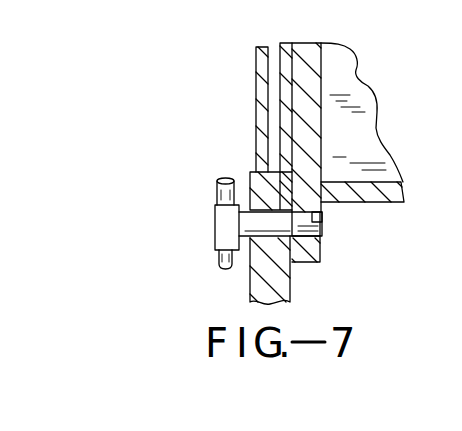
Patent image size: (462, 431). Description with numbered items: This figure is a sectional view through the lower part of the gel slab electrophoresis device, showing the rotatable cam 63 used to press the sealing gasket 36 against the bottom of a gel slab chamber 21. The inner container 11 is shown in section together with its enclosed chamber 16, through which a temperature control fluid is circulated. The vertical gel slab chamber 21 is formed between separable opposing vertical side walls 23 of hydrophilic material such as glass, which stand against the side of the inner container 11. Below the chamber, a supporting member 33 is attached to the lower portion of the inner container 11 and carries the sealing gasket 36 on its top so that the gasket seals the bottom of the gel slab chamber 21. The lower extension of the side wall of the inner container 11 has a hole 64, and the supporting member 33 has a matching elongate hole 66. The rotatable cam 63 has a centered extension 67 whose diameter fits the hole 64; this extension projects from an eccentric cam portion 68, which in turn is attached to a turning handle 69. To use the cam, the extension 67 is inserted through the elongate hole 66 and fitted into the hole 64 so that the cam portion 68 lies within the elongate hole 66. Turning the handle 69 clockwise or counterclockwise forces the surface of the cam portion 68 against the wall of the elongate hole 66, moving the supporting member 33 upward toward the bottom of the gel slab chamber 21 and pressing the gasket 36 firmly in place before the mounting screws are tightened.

The inner container 11 is at (378, 222).
The enclosed chamber 16 is at (364, 143).
The vertical gel slab chamber 21 is at (267, 83).
The vertical side walls 23 is at (256, 64).
The supporting members 33 is at (250, 291).
The sealing gasket 36 is at (250, 172).
The rotatable cam 63 is at (215, 212).
The hole 64 is at (322, 222).
The elongate hole 66 is at (262, 230).
The centered extension 67 is at (318, 240).
The eccentric cam portion 68 is at (262, 216).
The turning handle 69 is at (216, 178).